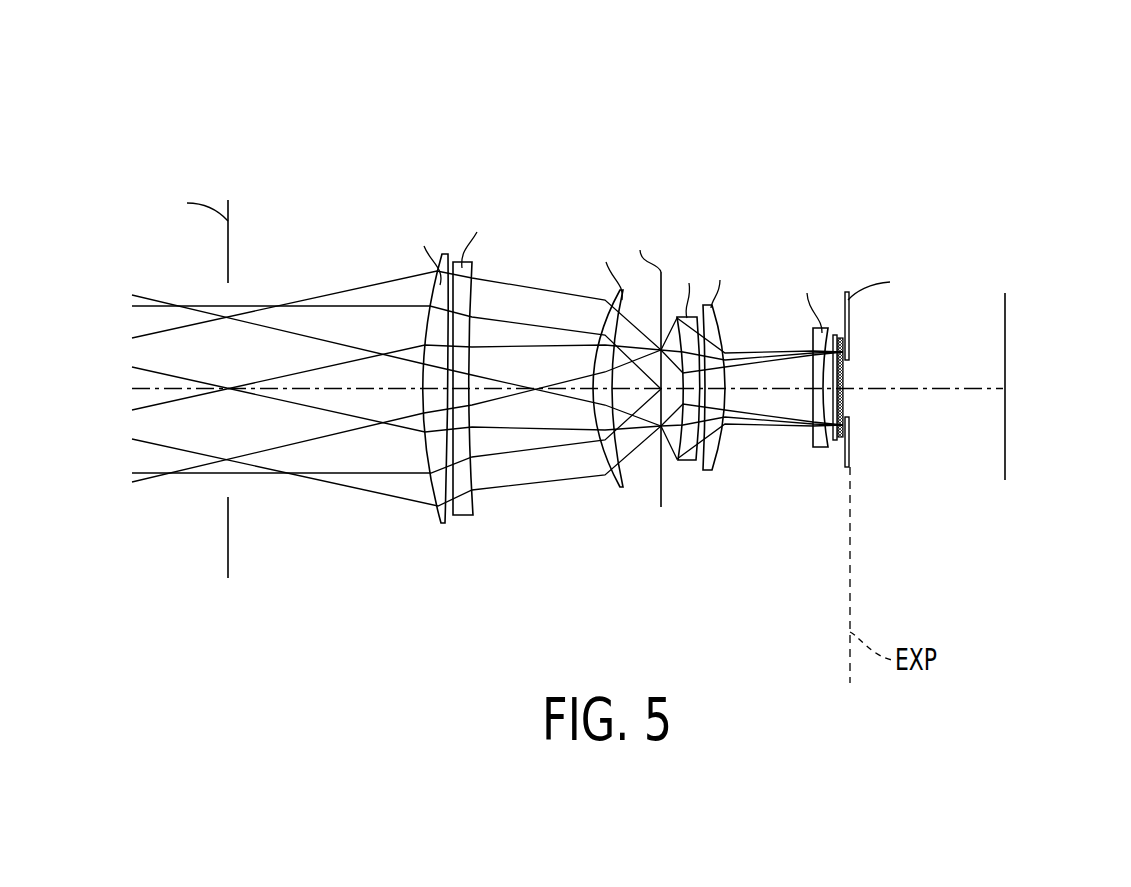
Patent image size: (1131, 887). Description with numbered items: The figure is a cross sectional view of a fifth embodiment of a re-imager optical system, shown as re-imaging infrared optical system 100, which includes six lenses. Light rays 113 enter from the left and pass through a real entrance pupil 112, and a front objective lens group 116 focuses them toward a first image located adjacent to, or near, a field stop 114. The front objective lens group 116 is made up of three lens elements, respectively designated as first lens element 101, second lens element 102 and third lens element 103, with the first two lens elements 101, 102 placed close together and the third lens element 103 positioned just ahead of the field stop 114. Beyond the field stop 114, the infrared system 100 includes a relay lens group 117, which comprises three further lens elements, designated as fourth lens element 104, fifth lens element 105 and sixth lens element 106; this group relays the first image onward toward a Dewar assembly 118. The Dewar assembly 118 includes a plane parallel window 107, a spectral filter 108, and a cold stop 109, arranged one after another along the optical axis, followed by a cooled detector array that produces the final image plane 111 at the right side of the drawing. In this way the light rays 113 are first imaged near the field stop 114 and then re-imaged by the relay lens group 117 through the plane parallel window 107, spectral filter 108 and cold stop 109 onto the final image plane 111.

The re-imaging infrared optical system 100 is at (590, 107).
The lens element L1 101 is at (438, 488).
The lens element L2 102 is at (460, 507).
The lens element L3 103 is at (615, 455).
The lens element L4 104 is at (685, 450).
The lens element L5 105 is at (713, 448).
The lens element L6 106 is at (815, 442).
The plane parallel window 107 is at (833, 447).
The spectral filter 108 is at (842, 443).
The cold stop 109 is at (849, 458).
The final image plane 111 is at (1007, 430).
The real entrance pupil 112 is at (228, 540).
The light rays 113 is at (305, 408).
The field stop 114 is at (661, 495).
The front objective lens group 116 is at (486, 140).
The relay lens group 117 is at (705, 150).
The Dewar assembly 118 is at (931, 260).